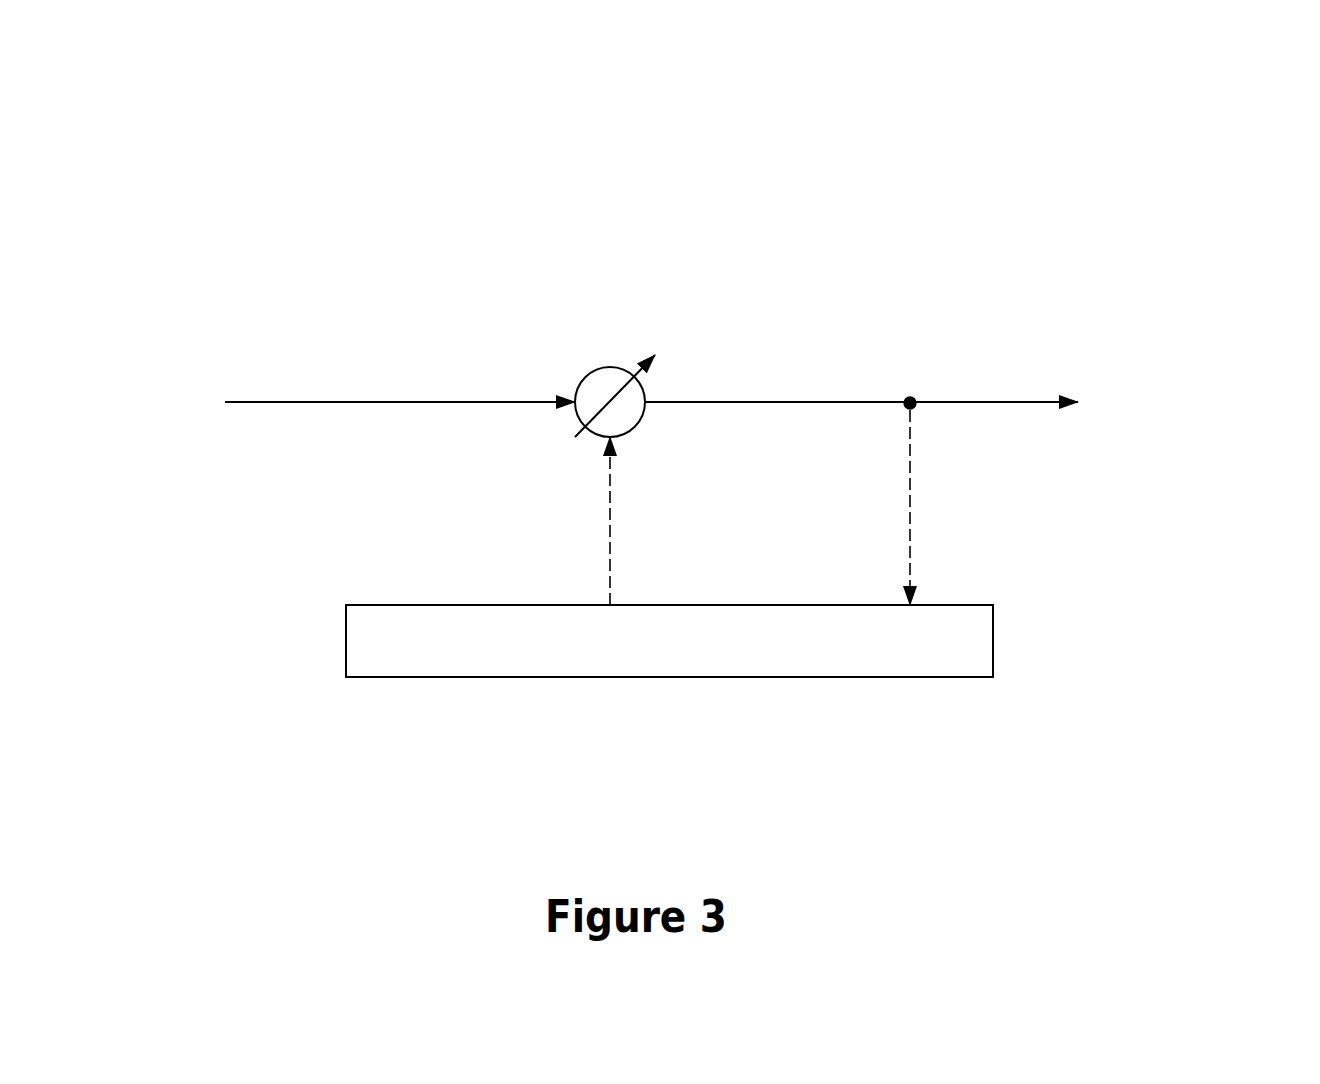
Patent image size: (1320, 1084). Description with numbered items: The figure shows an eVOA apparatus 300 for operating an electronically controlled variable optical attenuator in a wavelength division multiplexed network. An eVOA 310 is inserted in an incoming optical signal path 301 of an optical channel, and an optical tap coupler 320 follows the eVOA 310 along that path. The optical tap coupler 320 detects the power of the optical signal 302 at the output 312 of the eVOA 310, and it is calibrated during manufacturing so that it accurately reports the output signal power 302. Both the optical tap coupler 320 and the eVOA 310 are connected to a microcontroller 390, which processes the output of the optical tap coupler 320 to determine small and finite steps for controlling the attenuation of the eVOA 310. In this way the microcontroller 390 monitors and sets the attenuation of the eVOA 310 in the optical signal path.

The eVOA apparatus 300 is at (200, 82).
The incoming optical signal path 301 is at (171, 402).
The optical signal 302 is at (1184, 396).
The eVOA 310 is at (597, 368).
The output 312 is at (732, 402).
The optical tap coupler 320 is at (872, 365).
The microcontroller 390 is at (355, 605).